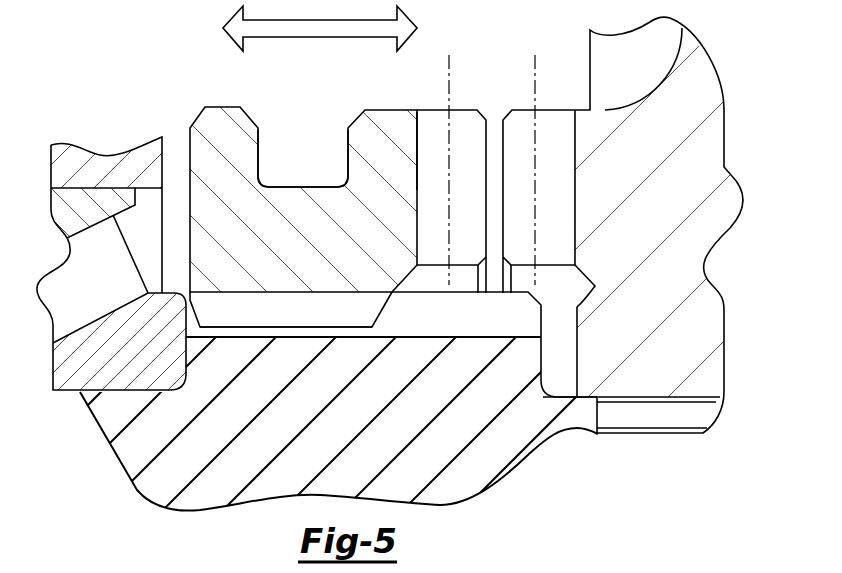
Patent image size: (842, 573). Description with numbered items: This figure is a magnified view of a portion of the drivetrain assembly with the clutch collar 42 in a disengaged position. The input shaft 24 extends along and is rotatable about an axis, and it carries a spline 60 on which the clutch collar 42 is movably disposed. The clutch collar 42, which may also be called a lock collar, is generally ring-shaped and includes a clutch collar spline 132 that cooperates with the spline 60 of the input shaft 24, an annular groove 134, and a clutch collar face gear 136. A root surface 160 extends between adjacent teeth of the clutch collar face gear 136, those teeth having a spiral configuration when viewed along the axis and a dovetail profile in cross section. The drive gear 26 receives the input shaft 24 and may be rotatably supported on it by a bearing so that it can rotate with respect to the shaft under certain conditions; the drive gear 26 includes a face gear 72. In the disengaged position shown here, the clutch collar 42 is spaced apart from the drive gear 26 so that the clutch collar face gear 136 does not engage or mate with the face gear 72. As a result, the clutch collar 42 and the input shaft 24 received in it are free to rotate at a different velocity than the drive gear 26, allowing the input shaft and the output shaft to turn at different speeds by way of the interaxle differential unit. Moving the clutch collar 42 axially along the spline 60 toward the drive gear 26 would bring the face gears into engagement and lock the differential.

The input shaft 24 is at (341, 452).
The drive gear 26 is at (692, 98).
The clutch collar 42 is at (308, 237).
The spline 60 is at (473, 322).
The face gear 72 is at (555, 110).
The clutch collar spline 132 is at (323, 327).
The annular groove 134 is at (258, 150).
The clutch collar face gear 136 is at (458, 110).
The root surface 160 is at (417, 152).